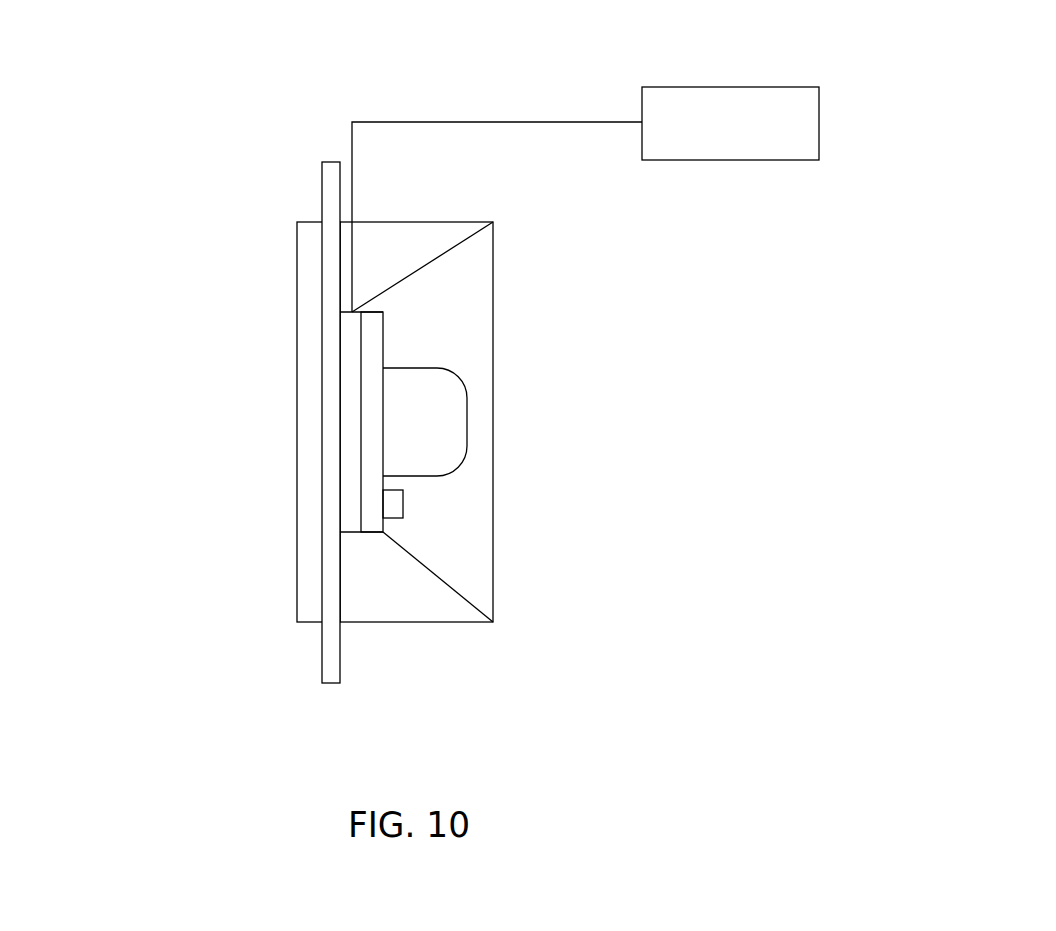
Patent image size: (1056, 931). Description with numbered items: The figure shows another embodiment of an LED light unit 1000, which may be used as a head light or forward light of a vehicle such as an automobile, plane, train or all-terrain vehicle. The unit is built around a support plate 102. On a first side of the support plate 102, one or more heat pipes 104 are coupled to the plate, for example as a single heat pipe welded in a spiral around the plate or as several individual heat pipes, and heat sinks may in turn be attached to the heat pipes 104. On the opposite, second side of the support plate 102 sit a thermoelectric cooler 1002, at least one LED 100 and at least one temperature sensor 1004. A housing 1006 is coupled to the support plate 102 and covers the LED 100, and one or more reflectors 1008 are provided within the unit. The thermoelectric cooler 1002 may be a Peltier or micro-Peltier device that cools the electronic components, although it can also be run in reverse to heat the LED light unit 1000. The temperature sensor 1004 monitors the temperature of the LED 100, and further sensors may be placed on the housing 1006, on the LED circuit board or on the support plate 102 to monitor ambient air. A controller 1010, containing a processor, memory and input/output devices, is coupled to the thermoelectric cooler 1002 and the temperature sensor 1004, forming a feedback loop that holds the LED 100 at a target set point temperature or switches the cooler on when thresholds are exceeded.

The LED light unit 1000 is at (1025, 76).
The LED 100 is at (467, 422).
The support plate 102 is at (328, 190).
The heat pipe 104 is at (298, 400).
The thermoelectric cooler 1002 is at (356, 311).
The temperature sensor 1004 is at (403, 502).
The housing 1006 is at (463, 222).
The reflector 1008 is at (440, 267).
The controller 1010 is at (743, 160).